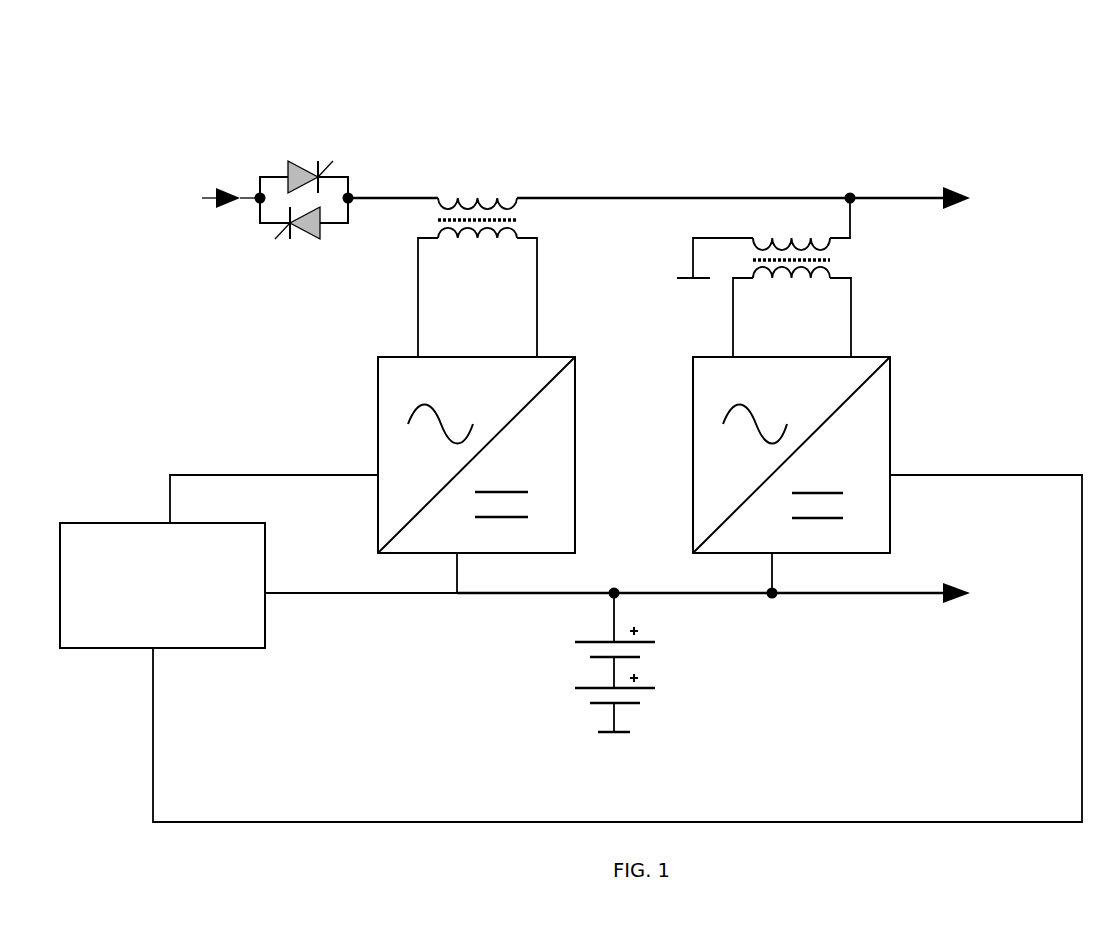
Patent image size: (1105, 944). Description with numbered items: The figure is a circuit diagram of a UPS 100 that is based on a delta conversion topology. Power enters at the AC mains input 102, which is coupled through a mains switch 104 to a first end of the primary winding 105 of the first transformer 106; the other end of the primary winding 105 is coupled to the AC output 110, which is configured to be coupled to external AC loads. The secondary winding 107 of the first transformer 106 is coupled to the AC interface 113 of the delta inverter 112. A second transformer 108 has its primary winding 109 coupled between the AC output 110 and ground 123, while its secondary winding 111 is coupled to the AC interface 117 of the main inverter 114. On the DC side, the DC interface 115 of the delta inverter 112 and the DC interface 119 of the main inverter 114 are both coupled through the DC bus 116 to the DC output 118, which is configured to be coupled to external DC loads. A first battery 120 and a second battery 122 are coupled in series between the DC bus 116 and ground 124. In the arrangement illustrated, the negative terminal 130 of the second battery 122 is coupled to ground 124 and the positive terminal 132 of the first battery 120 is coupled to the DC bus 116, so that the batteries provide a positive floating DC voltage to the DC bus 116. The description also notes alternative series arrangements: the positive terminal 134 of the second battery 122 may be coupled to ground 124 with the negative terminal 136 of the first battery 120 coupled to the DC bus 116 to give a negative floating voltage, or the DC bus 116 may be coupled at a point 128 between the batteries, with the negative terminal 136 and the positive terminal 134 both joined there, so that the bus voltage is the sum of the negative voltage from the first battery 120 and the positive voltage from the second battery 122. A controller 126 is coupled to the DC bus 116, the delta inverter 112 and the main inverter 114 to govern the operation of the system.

The UPS 100 is at (121, 73).
The AC mains input 102 is at (222, 195).
The mains switch 104 is at (273, 200).
The primary winding 105 is at (496, 202).
The first transformer 106 is at (523, 216).
The secondary winding 107 is at (495, 239).
The second transformer 108 is at (837, 250).
The primary winding 109 is at (805, 248).
The AC output 110 is at (961, 192).
The secondary winding 111 is at (800, 269).
The delta inverter 112 is at (468, 471).
The AC interface 113 is at (395, 398).
The main inverter 114 is at (858, 453).
The DC interface 115 is at (473, 537).
The DC bus 116 is at (543, 594).
The AC interface 117 is at (849, 370).
The DC output 118 is at (946, 586).
The DC interface 119 is at (773, 535).
The first battery 120 is at (655, 638).
The second battery 122 is at (595, 705).
The ground 123 is at (690, 280).
The ground 124 is at (623, 734).
The controller 126 is at (127, 522).
The point 128 is at (612, 672).
The negative terminal 130 is at (612, 705).
The positive terminal 132 is at (612, 640).
The positive terminal 134 is at (610, 687).
The negative terminal 136 is at (618, 658).